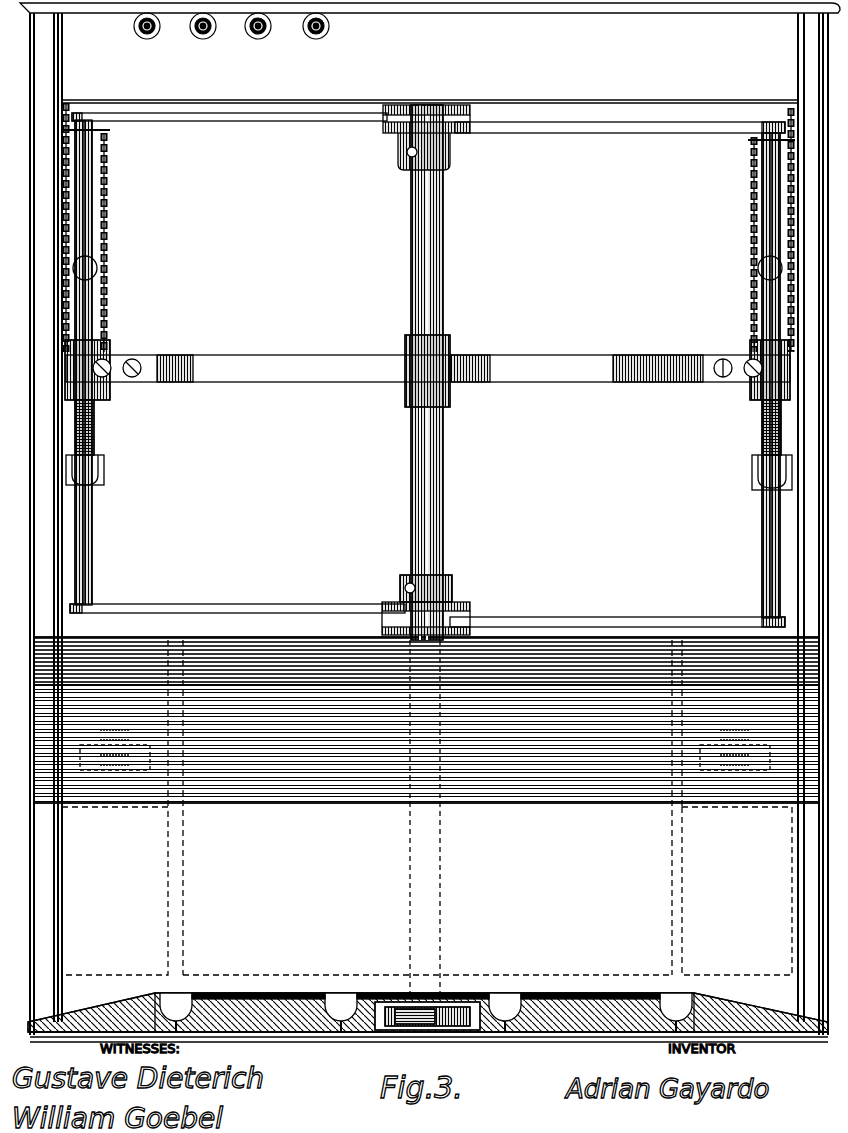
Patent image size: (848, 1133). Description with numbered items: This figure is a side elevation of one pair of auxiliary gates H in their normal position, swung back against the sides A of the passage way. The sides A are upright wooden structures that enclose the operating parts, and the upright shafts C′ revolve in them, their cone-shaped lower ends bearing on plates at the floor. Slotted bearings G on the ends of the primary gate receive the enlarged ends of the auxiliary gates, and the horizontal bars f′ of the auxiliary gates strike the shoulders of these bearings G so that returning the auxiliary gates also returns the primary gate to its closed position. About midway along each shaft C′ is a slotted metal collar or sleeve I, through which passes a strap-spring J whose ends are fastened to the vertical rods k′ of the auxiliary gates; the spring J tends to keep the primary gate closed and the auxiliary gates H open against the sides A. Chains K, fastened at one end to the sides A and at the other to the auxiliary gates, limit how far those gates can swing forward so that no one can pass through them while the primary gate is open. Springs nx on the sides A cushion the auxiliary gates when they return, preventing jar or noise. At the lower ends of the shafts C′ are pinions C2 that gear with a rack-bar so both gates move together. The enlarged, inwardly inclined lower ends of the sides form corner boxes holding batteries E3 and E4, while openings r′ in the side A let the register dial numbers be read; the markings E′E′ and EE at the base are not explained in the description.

The sides of the gate or passage way A is at (430, 522).
The openings r′ is at (314, 50).
The horizontal bars f′ is at (184, 118).
The bearings G is at (417, 137).
The shafts C′ is at (445, 213).
The auxiliary gates H is at (93, 555).
The chains K is at (100, 272).
The metal collars or sleeves I is at (451, 345).
The strap-springs J is at (427, 370).
The springs nx is at (97, 425).
The vertical rods k′ is at (96, 508).
The battery E3 is at (122, 807).
The battery E4 is at (487, 807).
The base block E′E′ is at (428, 1004).
The base block EE is at (508, 988).
The pinions C2 is at (427, 1030).